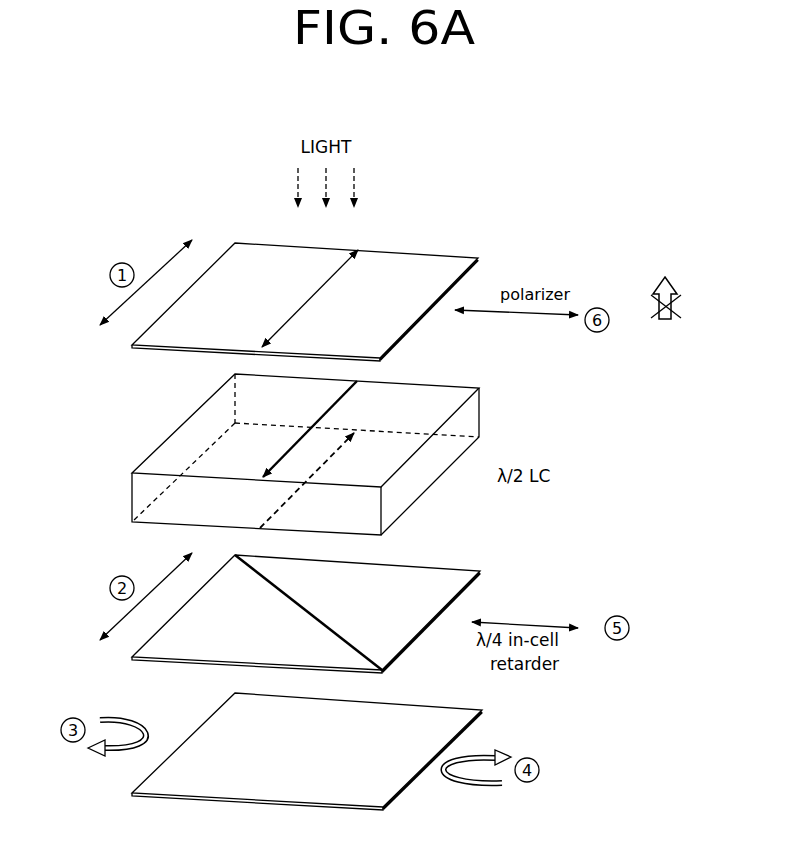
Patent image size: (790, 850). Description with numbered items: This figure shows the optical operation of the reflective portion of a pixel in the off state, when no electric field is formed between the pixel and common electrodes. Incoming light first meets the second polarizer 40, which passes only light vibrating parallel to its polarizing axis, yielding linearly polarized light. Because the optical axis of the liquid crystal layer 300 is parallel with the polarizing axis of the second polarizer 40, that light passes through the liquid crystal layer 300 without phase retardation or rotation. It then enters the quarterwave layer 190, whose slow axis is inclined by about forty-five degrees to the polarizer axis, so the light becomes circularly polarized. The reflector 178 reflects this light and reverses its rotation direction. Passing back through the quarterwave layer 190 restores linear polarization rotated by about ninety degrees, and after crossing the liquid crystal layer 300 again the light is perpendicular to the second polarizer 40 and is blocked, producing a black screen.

The second polarizer 40 is at (448, 255).
The liquid crystal layer 300 is at (480, 405).
The quarterwave layer 190 is at (460, 567).
The reflector 178 is at (483, 714).